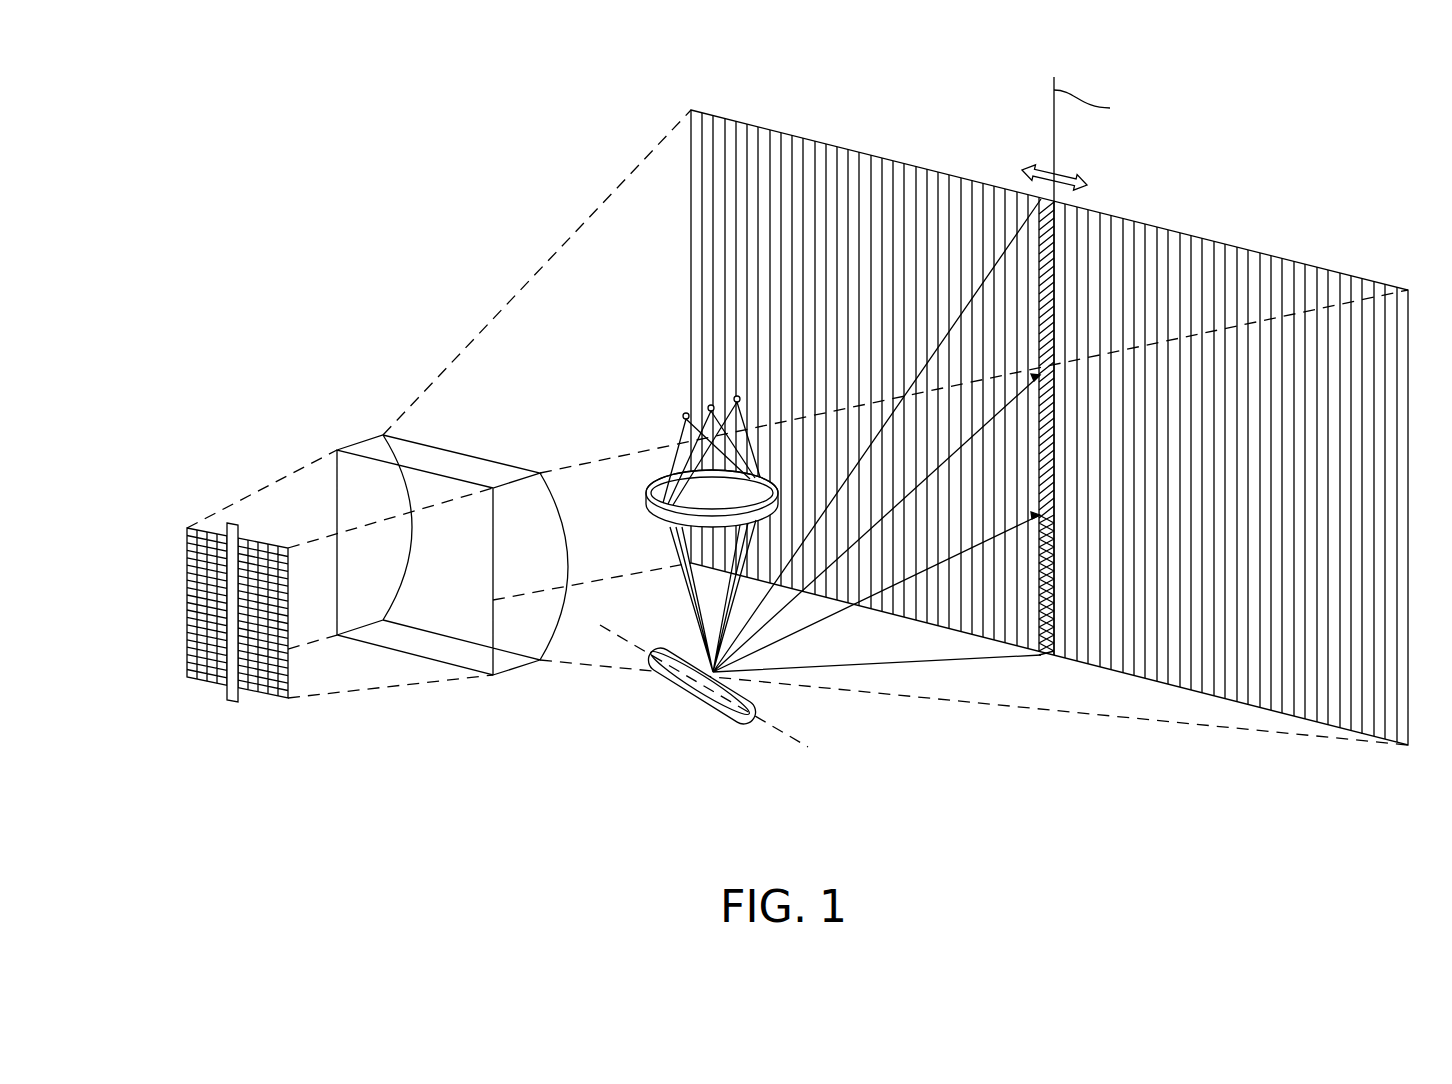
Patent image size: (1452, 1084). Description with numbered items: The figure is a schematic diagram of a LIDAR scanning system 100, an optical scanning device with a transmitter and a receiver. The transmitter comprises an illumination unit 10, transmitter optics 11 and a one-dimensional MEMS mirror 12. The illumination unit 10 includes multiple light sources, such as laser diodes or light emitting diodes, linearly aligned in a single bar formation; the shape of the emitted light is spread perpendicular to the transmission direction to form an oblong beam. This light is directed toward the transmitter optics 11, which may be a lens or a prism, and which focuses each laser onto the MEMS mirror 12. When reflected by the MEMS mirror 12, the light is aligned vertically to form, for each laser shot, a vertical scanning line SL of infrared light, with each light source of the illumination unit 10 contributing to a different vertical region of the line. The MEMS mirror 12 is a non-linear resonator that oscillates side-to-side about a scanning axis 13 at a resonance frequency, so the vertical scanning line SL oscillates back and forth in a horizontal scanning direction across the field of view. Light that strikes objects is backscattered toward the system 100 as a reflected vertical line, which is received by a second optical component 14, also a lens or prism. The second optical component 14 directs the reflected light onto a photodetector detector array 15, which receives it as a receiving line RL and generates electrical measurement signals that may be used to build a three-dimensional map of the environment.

The LIDAR scanning system 100 is at (259, 173).
The illumination unit 10 is at (672, 393).
The transmitter optics 11 is at (645, 493).
The MEMS mirror 12 is at (752, 703).
The scanning axis 13 is at (772, 735).
The second optical component 14 is at (453, 462).
The photodetector detector array 15 is at (198, 527).
The vertical scanning line SL is at (1042, 198).
The receiving line RL is at (226, 715).